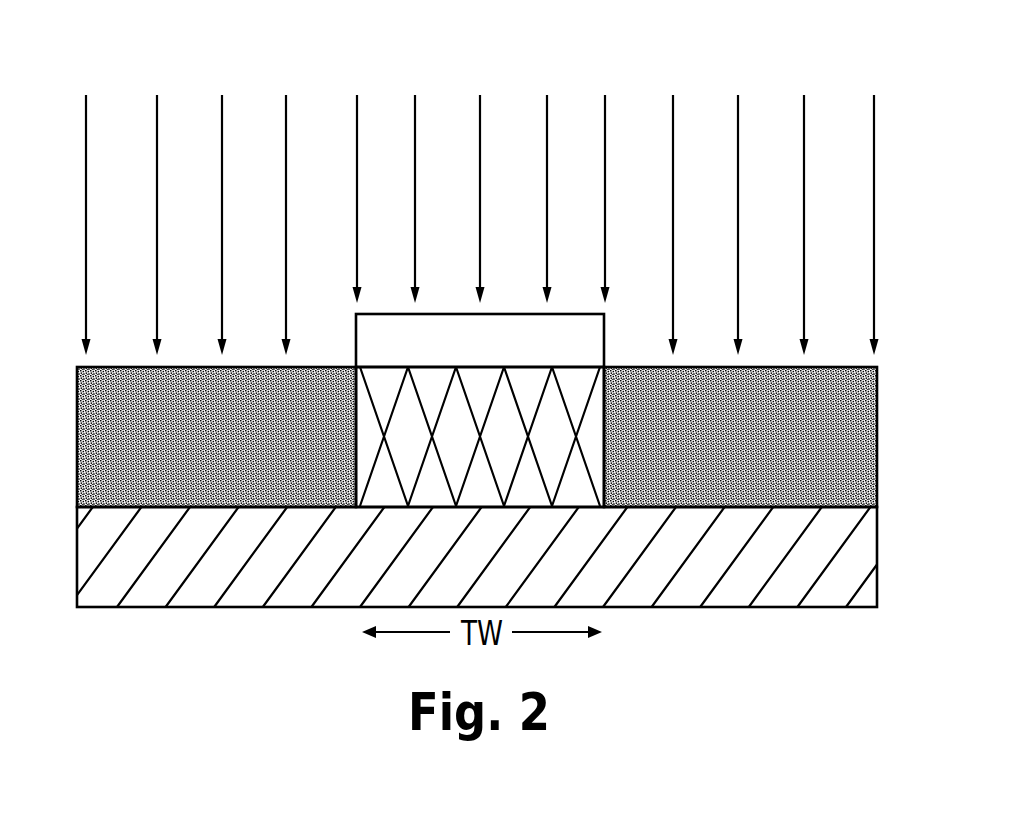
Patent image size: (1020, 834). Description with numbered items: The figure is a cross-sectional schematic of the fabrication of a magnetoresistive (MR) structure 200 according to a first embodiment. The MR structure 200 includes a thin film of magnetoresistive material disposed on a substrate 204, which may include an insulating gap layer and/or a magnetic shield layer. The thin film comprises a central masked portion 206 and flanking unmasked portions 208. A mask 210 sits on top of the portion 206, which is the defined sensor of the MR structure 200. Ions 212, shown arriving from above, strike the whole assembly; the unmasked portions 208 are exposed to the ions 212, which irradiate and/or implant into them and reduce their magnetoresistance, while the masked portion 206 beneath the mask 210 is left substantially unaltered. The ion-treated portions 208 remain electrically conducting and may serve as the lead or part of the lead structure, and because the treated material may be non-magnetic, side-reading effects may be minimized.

The MR structure 200 is at (477, 515).
The substrate 204 is at (477, 557).
The masked portion 206 is at (480, 437).
The unmasked portions 208 is at (477, 437).
The mask 210 is at (480, 340).
The ions 212 is at (84, 263).